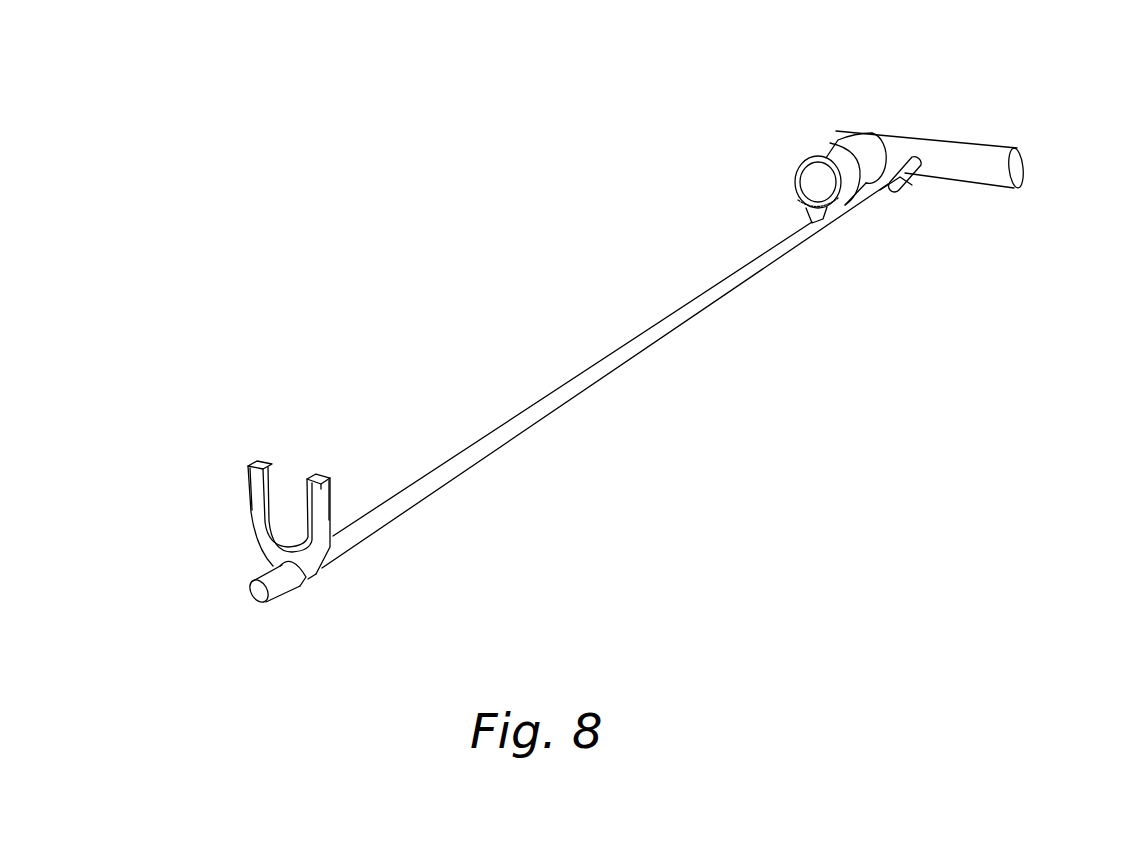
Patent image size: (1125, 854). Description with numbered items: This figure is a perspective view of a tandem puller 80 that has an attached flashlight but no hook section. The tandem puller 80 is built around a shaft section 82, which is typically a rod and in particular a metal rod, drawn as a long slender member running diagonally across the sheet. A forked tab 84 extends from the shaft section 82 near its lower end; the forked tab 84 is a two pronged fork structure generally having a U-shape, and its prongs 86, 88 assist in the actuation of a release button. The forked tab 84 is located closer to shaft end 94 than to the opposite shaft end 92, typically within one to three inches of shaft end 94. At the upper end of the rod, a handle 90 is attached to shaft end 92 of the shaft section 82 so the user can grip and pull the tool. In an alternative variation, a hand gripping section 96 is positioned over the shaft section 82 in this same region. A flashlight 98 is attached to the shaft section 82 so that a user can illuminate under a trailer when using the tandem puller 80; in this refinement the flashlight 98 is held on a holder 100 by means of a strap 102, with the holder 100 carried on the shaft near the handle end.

The tandem puller 80 is at (390, 278).
The shaft section 82 is at (537, 424).
The forked tab 84 is at (248, 492).
The prong 86 is at (258, 460).
The prong 88 is at (315, 475).
The handle 90 is at (968, 160).
The shaft end 92 is at (915, 153).
The shaft end 94 is at (240, 583).
The hand gripping section 96 is at (907, 177).
The flashlight 98 is at (812, 152).
The holder 100 is at (810, 210).
The strap 102 is at (847, 143).